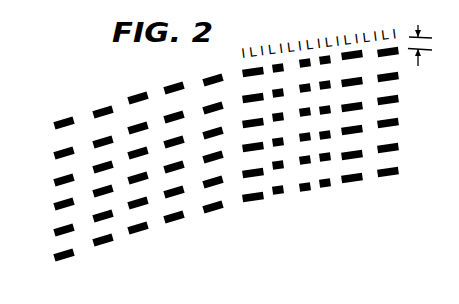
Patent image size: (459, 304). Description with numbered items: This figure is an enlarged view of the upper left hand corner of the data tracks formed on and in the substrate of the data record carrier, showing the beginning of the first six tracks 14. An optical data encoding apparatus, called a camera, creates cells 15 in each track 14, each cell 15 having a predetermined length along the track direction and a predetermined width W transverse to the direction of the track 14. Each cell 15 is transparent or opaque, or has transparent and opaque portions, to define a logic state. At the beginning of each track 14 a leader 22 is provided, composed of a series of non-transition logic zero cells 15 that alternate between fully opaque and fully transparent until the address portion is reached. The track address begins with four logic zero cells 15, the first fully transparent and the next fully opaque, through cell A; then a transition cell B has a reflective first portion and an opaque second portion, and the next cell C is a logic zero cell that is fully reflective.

The track 14 is at (54, 130).
The leader 22 is at (185, 74).
The cell 15 is at (364, 180).
The cell A is at (264, 207).
The transition cell B is at (284, 204).
The cell C is at (313, 197).
The width W is at (420, 56).